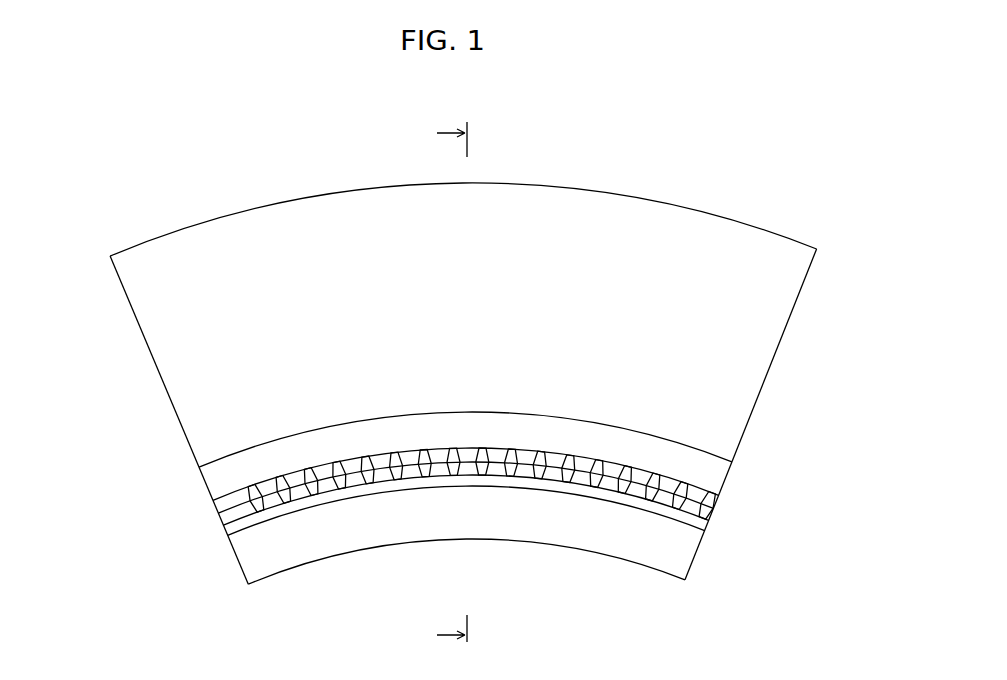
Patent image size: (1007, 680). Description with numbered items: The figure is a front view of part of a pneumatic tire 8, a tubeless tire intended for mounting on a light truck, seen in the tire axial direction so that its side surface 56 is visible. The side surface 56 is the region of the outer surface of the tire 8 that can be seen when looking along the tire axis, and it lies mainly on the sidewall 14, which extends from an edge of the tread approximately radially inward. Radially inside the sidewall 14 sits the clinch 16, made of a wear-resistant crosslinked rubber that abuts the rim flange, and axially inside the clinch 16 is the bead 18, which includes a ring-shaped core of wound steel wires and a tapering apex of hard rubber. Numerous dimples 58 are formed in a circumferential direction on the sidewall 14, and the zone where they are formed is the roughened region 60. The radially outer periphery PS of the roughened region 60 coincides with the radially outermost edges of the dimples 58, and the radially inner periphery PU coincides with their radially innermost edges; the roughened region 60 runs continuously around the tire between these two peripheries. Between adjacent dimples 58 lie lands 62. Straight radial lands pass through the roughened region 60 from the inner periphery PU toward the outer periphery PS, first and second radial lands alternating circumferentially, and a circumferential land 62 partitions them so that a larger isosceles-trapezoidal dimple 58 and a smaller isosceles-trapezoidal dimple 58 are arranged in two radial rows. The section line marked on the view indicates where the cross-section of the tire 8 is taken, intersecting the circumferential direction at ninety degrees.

The pneumatic tire 8 is at (716, 115).
The sidewall 14 is at (202, 427).
The clinch 16 is at (642, 553).
The bead 18 is at (218, 552).
The side surface 56 is at (735, 410).
The dimple 58 is at (297, 600).
The roughened region 60 is at (738, 510).
The land 62 is at (514, 455).
The outer periphery PS is at (727, 502).
The inner periphery PU is at (718, 527).